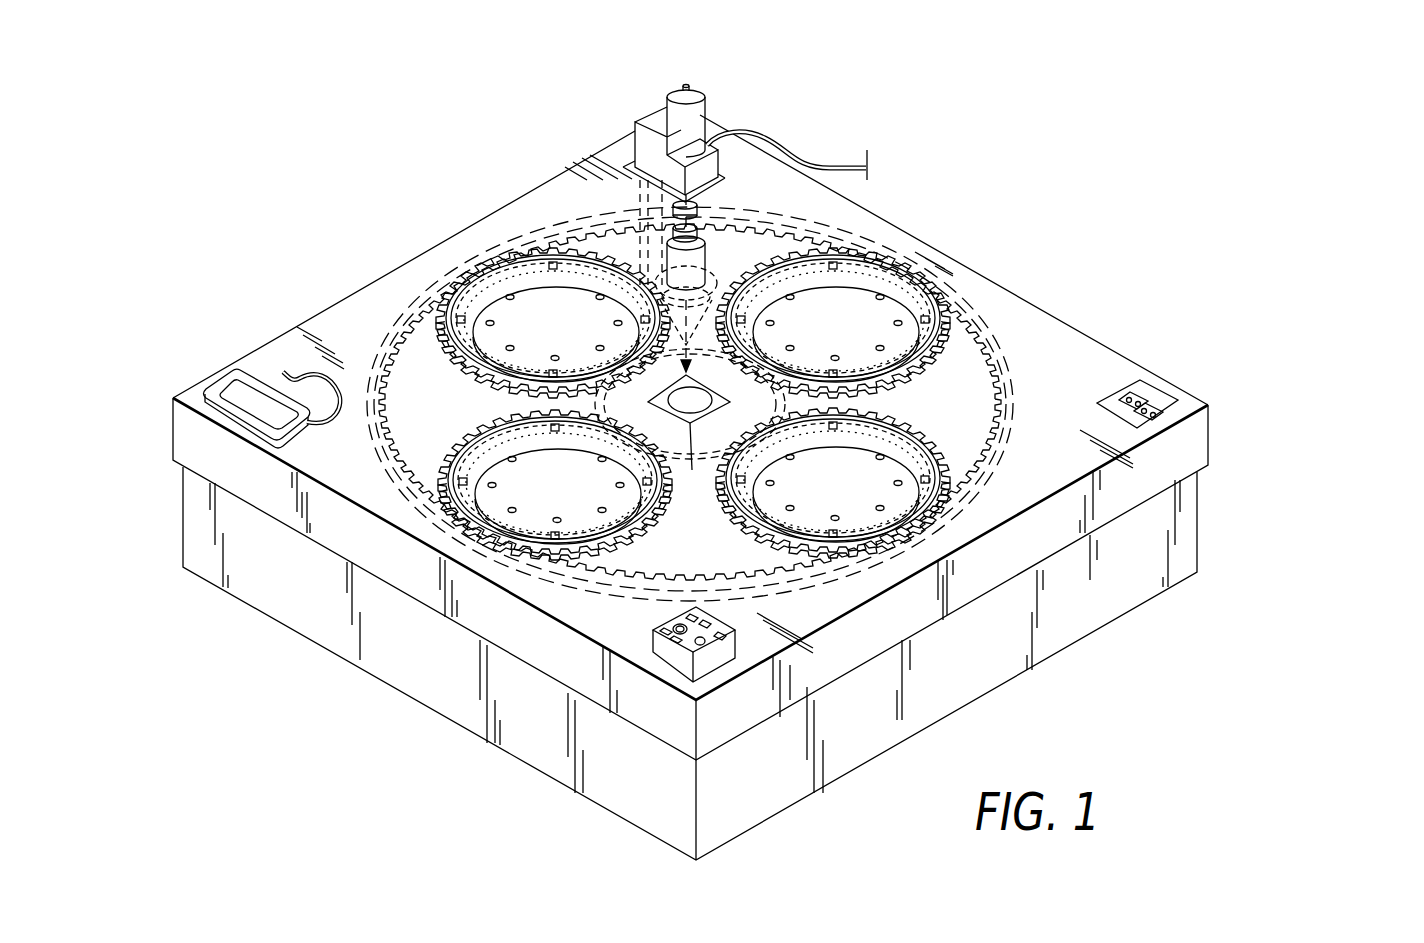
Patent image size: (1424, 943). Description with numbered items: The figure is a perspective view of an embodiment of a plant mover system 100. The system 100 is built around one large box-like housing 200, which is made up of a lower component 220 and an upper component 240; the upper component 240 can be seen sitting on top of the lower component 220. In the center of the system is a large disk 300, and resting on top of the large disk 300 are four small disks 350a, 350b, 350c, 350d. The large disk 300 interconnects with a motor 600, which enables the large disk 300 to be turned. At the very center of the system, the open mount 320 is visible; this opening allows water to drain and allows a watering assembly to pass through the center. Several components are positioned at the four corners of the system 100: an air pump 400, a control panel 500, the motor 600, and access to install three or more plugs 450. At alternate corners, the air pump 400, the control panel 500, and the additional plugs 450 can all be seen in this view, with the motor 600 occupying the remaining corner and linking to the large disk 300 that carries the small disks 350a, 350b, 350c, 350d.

The plant mover system 100 is at (252, 194).
The housing 200 is at (790, 487).
The lower component 220 is at (1200, 528).
The upper component 240 is at (1200, 440).
The large disk 300 is at (750, 247).
The open mount 320 is at (690, 430).
The small disk 350a is at (487, 287).
The small disk 350b is at (905, 278).
The small disk 350c is at (977, 483).
The small disk 350d is at (385, 510).
The air pump 400 is at (242, 383).
The plugs 450 is at (1150, 392).
The control panel 500 is at (670, 651).
The motor 600 is at (697, 132).